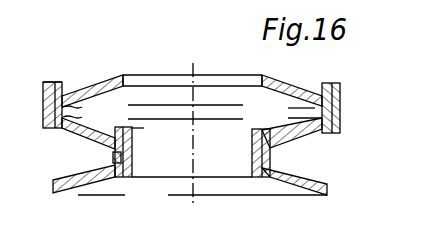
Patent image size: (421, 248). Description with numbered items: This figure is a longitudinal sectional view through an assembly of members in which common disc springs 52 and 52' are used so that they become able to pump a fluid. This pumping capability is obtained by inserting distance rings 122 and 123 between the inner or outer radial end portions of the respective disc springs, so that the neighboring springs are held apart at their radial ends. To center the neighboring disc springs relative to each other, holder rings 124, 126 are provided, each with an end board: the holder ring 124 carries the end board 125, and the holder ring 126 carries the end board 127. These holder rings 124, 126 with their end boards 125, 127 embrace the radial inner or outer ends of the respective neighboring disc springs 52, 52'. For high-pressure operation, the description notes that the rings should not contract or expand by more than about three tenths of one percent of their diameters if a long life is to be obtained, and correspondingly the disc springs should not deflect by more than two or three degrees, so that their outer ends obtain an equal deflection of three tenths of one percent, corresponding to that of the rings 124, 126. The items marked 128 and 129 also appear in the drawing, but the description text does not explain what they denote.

The disc spring 52 is at (88, 133).
The disc spring 52' is at (67, 143).
The distance ring 122 is at (153, 109).
The distance ring 123 is at (113, 158).
The holder ring 124 is at (43, 106).
The end board 125 is at (50, 82).
The holder ring 126 is at (133, 162).
The end board 127 is at (193, 129).
The bore 128 is at (286, 111).
The inner flange 129 is at (280, 155).